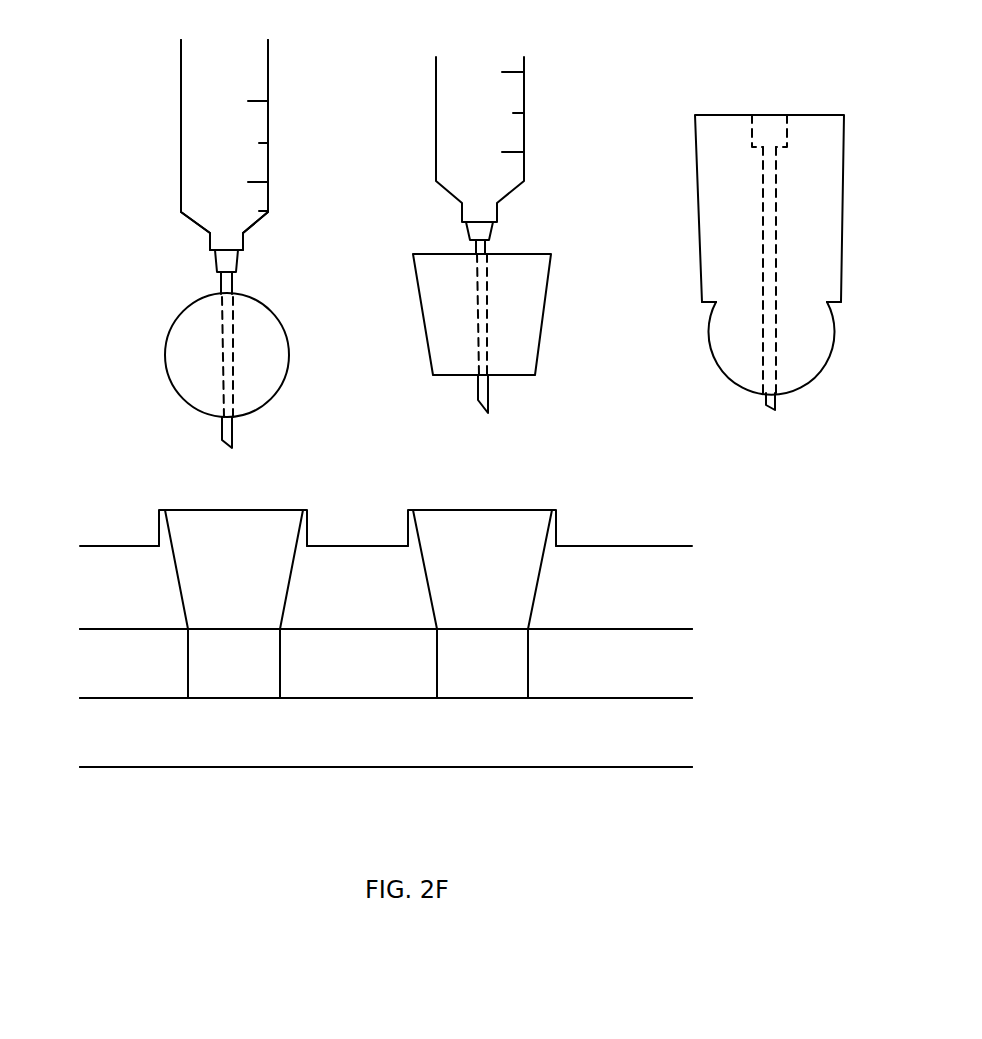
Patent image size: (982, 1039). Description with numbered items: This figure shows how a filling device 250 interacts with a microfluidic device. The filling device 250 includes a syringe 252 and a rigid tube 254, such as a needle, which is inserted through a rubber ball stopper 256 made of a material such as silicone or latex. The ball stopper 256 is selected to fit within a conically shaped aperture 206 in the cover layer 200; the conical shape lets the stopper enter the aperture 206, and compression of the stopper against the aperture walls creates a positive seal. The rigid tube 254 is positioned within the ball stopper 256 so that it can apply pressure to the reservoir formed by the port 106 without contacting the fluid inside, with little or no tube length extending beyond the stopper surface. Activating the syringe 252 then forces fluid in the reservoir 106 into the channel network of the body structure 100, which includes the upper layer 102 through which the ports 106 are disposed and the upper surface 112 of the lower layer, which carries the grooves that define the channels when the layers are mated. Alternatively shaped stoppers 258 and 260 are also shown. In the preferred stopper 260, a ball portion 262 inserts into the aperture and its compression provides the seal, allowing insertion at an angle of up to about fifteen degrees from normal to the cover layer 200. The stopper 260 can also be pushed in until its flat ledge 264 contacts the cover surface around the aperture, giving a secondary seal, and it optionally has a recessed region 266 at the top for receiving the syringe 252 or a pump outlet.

The filling device 250 is at (134, 70).
The syringe 252 is at (436, 72).
The rigid tube 254 is at (236, 285).
The ball stopper 256 is at (289, 345).
The alternatively shaped stopper 258 is at (533, 302).
The alternatively shaped stopper 260 is at (713, 174).
The ball portion 262 is at (822, 335).
The flat ledge 264 is at (829, 304).
The recessed region 266 is at (773, 115).
The aperture 206 is at (193, 530).
The cover layer 200 is at (657, 585).
The upper layer 102 is at (137, 665).
The port 106 is at (455, 660).
The upper surface of the lower layer 112 is at (143, 730).
The body structure 100 is at (750, 638).